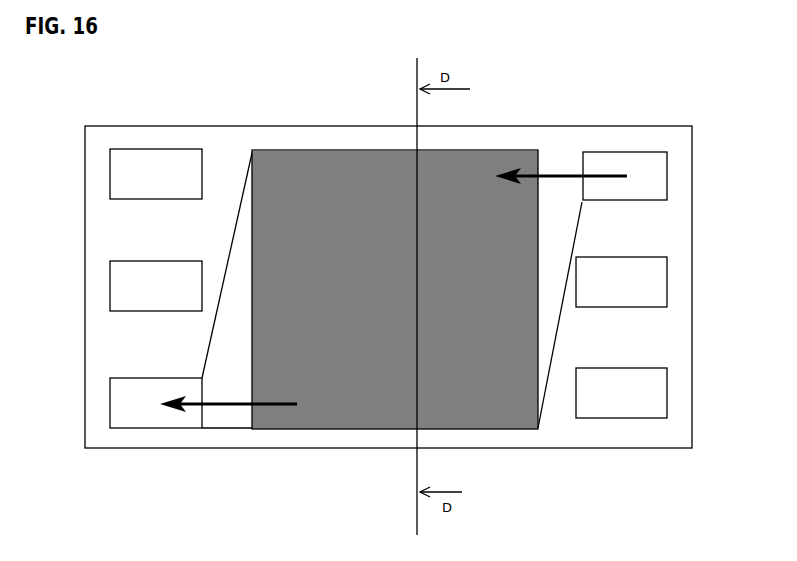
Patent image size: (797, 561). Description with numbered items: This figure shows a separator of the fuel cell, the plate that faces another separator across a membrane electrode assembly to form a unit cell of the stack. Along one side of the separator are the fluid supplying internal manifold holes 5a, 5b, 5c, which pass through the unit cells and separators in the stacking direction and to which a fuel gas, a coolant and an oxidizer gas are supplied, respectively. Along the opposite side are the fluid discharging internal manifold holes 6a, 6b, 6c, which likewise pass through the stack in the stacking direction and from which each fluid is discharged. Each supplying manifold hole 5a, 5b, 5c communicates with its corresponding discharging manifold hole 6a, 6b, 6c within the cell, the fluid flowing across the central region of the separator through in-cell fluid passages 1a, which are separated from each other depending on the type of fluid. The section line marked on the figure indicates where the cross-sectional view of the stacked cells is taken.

The in-cell fluid passage 1a is at (353, 150).
The fluid supplying internal manifold hole 5a is at (647, 170).
The fluid supplying internal manifold hole 5b is at (647, 282).
The fluid supplying internal manifold hole 5c is at (647, 387).
The fluid discharging internal manifold hole 6a is at (123, 395).
The fluid discharging internal manifold hole 6b is at (123, 268).
The fluid discharging internal manifold hole 6c is at (123, 175).